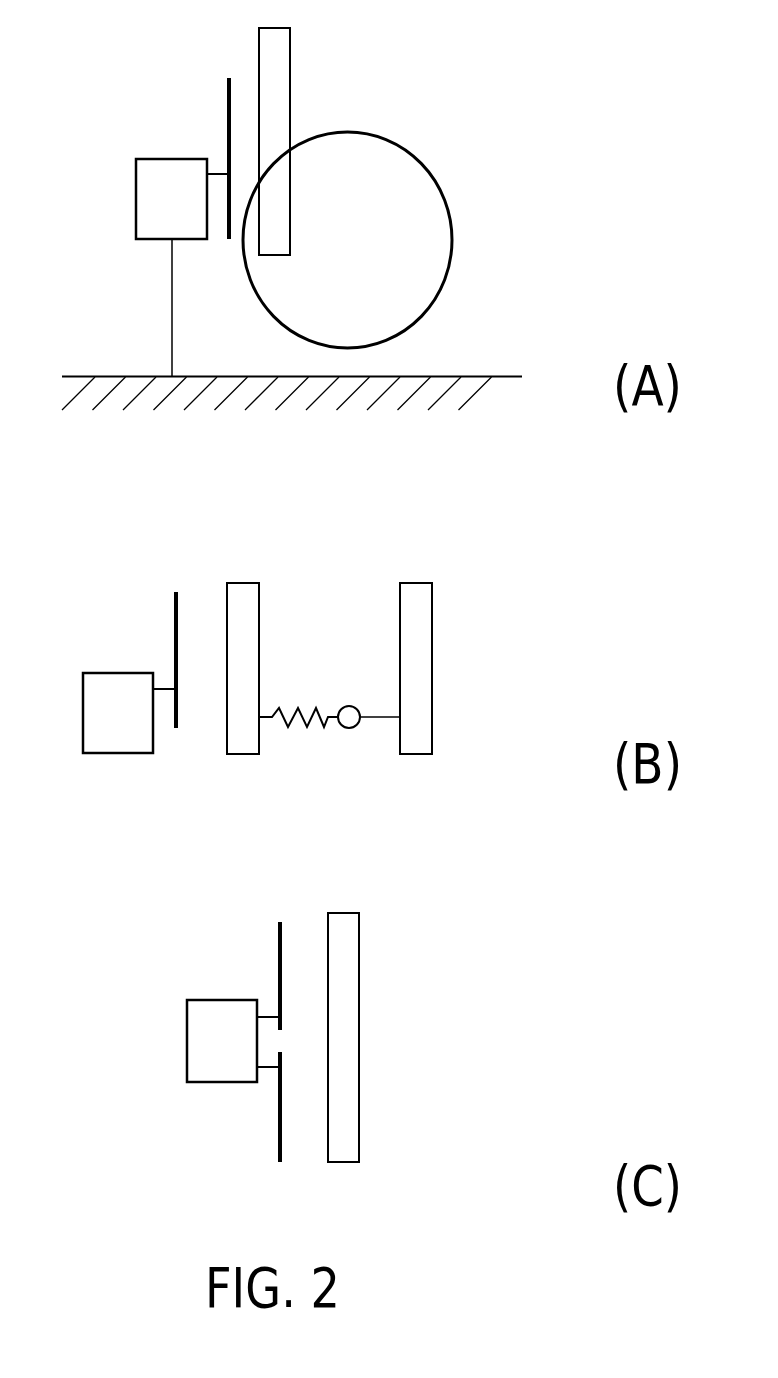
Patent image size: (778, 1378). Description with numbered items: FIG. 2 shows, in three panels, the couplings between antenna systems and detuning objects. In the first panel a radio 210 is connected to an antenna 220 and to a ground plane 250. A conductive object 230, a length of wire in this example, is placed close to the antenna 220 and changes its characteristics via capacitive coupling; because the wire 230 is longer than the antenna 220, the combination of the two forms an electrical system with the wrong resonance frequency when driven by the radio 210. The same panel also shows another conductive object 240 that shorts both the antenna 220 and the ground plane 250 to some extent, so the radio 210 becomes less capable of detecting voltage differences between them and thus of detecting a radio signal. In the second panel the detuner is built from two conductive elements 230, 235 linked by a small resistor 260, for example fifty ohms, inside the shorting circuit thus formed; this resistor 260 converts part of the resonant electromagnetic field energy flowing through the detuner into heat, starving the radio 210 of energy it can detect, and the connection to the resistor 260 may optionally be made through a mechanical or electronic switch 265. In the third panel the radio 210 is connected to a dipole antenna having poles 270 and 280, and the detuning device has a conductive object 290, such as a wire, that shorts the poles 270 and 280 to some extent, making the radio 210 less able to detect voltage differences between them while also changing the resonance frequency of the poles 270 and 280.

The radio 210 is at (152, 160).
The antenna 220 is at (230, 78).
The conductive object 230 is at (291, 39).
The conductive element 235 is at (418, 583).
The conductive object 240 is at (390, 140).
The ground plane 250 is at (132, 376).
The resistor 260 is at (295, 727).
The switch 265 is at (350, 706).
The antenna pole 270 is at (280, 922).
The antenna pole 280 is at (280, 1162).
The conductive object 290 is at (345, 913).